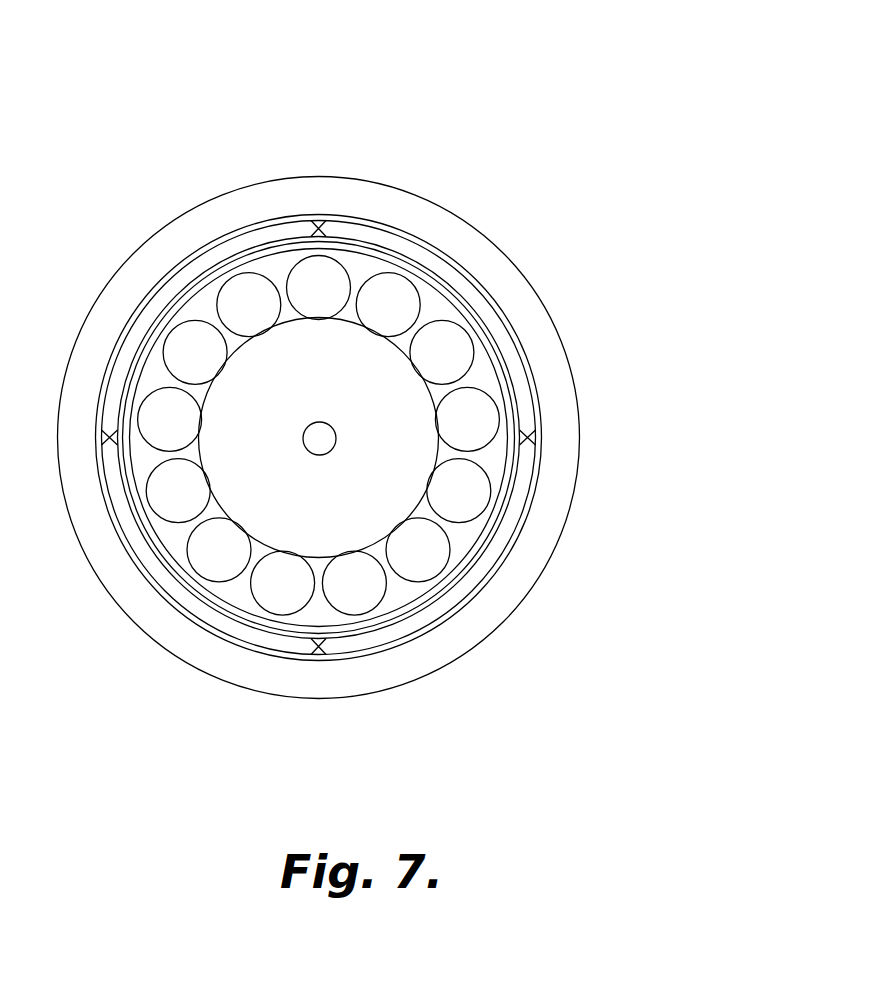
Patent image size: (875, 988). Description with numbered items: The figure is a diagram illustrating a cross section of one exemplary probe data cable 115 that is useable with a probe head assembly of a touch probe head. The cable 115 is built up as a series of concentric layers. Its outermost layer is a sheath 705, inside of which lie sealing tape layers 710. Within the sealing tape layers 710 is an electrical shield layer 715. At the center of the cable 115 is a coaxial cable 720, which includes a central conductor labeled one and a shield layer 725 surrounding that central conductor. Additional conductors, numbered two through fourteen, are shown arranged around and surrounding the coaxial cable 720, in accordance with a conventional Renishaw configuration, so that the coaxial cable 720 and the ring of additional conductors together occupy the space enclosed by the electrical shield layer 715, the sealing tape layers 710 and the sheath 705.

The probe data cable 115 is at (698, 111).
The sheath 705 is at (413, 213).
The sealing tape layers 710 is at (447, 283).
The electrical shield layer 715 is at (488, 317).
The coaxial cable 720 is at (363, 417).
The shield layer 725 is at (413, 513).